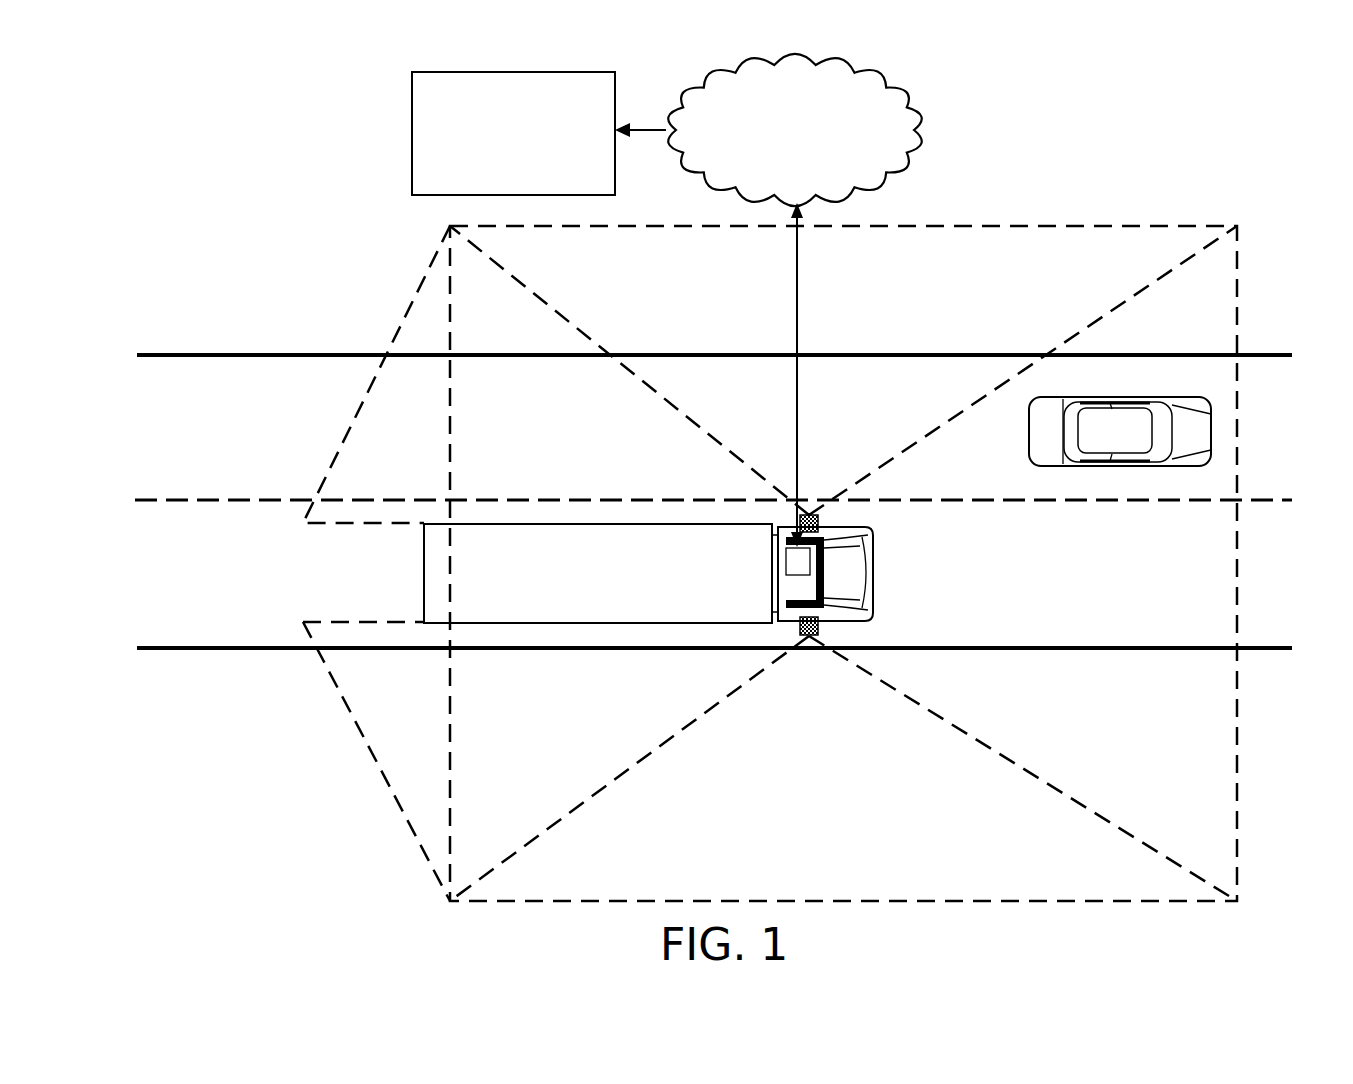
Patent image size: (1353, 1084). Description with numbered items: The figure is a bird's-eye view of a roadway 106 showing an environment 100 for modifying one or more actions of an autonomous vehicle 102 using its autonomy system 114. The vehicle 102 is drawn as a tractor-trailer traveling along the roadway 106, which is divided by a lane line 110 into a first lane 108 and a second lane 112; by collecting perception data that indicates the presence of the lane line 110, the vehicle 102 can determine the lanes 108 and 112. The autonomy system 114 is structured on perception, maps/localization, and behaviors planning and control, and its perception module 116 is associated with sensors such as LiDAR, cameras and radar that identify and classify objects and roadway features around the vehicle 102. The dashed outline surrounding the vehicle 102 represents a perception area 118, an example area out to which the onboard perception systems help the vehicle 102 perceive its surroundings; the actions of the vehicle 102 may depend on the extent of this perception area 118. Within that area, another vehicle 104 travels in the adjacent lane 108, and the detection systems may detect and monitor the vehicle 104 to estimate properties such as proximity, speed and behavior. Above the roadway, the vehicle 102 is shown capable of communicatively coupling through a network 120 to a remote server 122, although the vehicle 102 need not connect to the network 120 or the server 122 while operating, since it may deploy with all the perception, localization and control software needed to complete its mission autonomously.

The environment 100 is at (1150, 84).
The autonomous vehicle 102 is at (518, 524).
The vehicle 104 is at (1055, 467).
The roadway 106 is at (183, 355).
The lane 108 is at (185, 420).
The lane line 110 is at (246, 500).
The lane 112 is at (185, 580).
The autonomy system 114 is at (795, 540).
The perception module 116 is at (808, 646).
The perception area 118 is at (1000, 226).
The network 120 is at (768, 130).
The server 122 is at (513, 133).